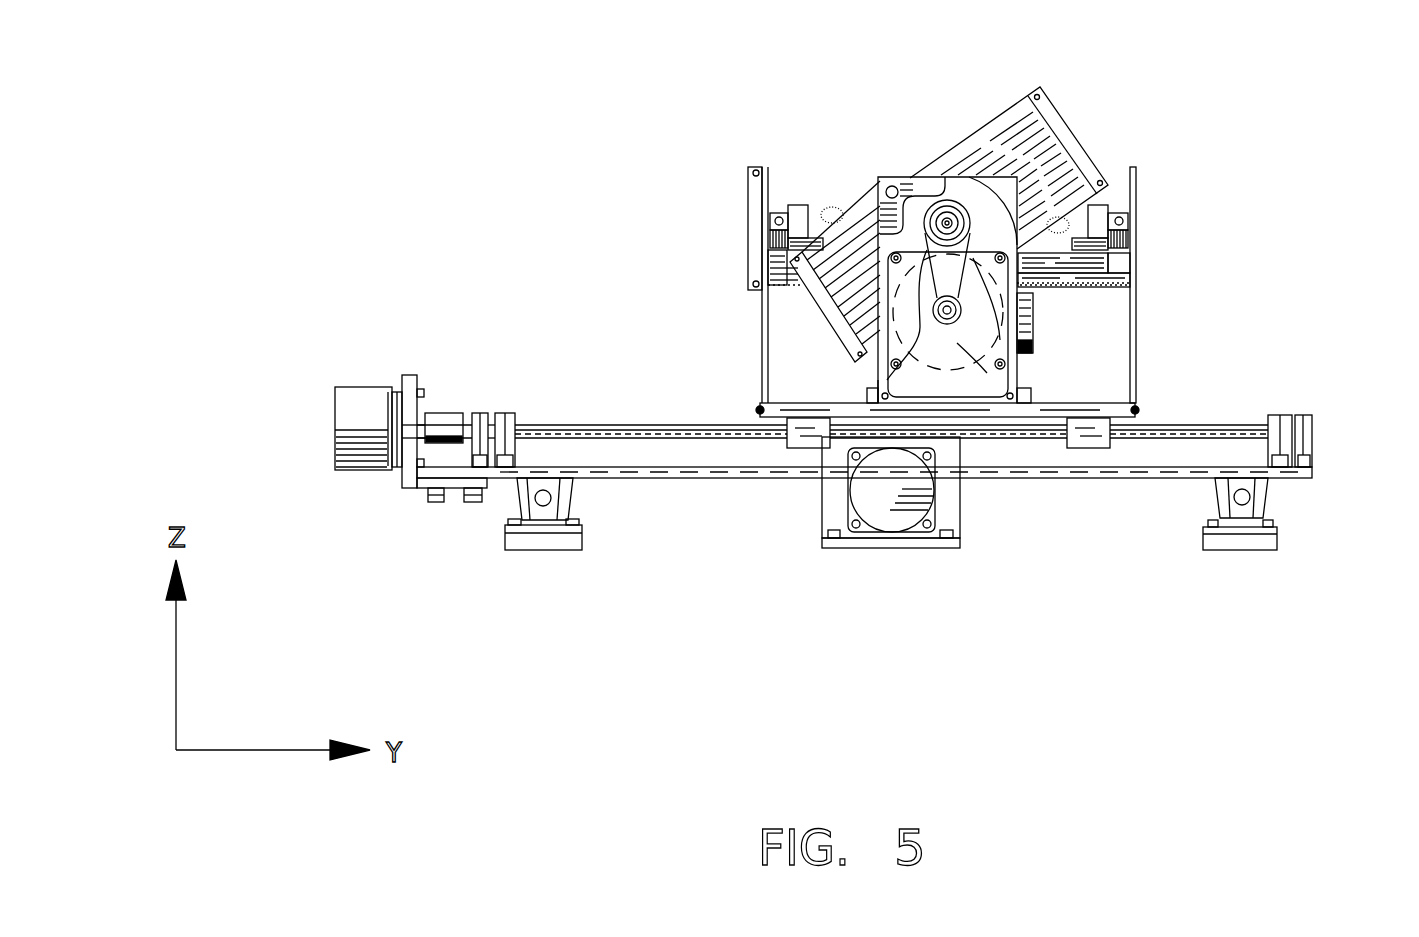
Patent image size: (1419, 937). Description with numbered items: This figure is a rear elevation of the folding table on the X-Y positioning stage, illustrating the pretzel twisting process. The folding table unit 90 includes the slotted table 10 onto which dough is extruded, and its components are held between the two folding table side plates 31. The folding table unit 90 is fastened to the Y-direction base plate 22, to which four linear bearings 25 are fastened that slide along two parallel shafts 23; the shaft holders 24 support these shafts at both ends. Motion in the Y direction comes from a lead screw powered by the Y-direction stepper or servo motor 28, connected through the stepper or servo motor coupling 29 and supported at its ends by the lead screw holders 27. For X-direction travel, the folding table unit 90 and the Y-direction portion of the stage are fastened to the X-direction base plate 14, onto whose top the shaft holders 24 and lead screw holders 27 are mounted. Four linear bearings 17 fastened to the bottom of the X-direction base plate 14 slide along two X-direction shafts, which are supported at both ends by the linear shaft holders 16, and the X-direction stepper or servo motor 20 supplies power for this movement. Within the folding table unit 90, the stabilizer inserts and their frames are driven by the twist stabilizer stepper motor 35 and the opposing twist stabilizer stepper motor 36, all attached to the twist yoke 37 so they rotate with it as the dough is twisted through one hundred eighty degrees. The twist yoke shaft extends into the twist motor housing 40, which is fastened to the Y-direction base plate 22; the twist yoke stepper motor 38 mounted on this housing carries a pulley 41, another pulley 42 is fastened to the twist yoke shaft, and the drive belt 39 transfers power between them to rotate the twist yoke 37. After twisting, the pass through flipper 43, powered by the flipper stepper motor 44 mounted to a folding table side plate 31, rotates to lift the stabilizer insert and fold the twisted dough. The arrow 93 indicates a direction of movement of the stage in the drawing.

The slotted table 10 is at (798, 227).
The X-direction base plate 14 is at (1150, 473).
The linear shaft holders 16 is at (542, 523).
The linear bearings 17 is at (577, 493).
The X-direction stepper or servo motor 20 is at (888, 483).
The Y-direction base plate 22 is at (988, 410).
The parallel shafts 23 is at (540, 425).
The shaft holders 24 is at (507, 425).
The linear bearings 25 is at (807, 435).
The lead screw holders 27 is at (480, 425).
The Y-direction stepper or servo motor 28 is at (362, 413).
The stepper or servo motor coupling 29 is at (447, 423).
The folding table side plates 31 is at (762, 382).
The twist stabilizer stepper motor 35 is at (1072, 138).
The opposing twist stabilizer stepper motor 36 is at (820, 307).
The twist yoke 37 is at (997, 163).
The twist yoke stepper motor 38 is at (957, 343).
The drive belt 39 is at (1003, 313).
The twist motor housing 40 is at (903, 187).
The pulley 41 is at (880, 381).
The pulley 42 is at (947, 220).
The pass through flipper 43 is at (780, 265).
The flipper stepper motor 44 is at (753, 188).
The folding table unit 90 is at (709, 211).
The translation direction 93 is at (720, 509).